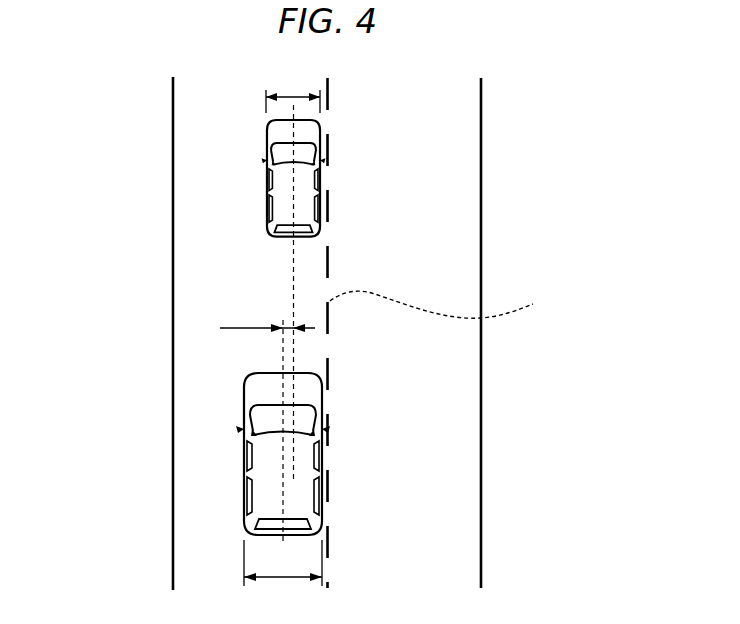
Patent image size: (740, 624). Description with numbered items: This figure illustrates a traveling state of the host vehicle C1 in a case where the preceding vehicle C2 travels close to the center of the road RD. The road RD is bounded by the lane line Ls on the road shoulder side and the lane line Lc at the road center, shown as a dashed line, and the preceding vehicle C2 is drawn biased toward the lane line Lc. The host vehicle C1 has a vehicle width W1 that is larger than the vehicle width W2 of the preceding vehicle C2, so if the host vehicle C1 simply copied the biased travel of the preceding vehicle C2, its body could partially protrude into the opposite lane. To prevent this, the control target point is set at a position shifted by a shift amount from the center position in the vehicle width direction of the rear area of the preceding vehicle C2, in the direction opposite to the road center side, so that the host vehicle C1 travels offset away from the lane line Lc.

The host vehicle C1 is at (245, 471).
The preceding vehicle C2 is at (266, 188).
The vehicle width of the host vehicle W1 is at (283, 563).
The vehicle width of the preceding vehicle W2 is at (293, 91).
The lane line on the road shoulder side Ls is at (172, 312).
The lane line at the center of the road Lc is at (445, 304).
The road RD is at (492, 200).